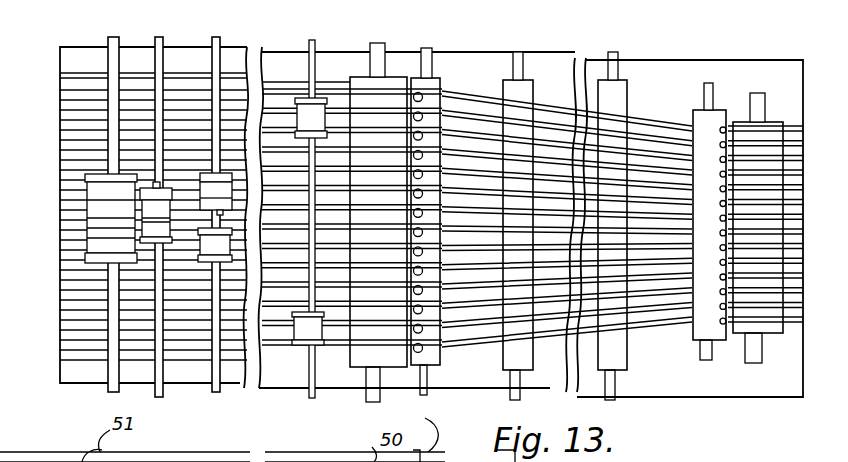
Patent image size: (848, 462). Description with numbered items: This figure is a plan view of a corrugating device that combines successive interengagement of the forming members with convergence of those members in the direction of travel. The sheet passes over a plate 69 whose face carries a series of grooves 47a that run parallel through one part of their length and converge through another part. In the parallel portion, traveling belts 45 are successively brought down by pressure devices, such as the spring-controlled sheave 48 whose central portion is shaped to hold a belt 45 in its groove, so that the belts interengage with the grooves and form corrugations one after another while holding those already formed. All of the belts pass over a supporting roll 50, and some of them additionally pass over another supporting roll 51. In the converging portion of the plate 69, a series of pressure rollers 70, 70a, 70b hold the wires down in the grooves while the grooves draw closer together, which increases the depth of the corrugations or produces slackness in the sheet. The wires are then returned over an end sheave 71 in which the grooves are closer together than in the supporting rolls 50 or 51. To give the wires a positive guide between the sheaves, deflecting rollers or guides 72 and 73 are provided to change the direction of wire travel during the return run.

The grooves 47a is at (62, 80).
The supporting roll 51 is at (85, 178).
The belt 45 is at (87, 213).
The sheave 48 is at (146, 228).
The supporting roll 50 is at (392, 77).
The pressure roller 70 is at (447, 62).
The pressure roller 70a is at (524, 82).
The pressure roller 70b is at (618, 80).
The plate 69 is at (663, 75).
The deflecting roller 72 is at (726, 127).
The end sheave 71 is at (780, 122).
The deflecting roller 73 is at (412, 368).